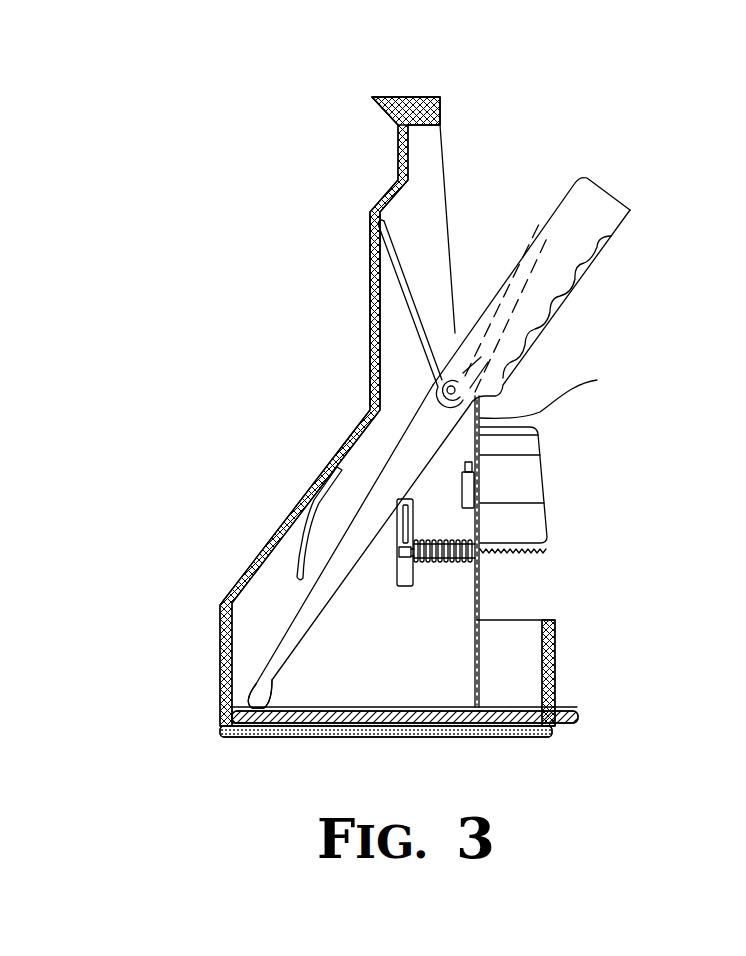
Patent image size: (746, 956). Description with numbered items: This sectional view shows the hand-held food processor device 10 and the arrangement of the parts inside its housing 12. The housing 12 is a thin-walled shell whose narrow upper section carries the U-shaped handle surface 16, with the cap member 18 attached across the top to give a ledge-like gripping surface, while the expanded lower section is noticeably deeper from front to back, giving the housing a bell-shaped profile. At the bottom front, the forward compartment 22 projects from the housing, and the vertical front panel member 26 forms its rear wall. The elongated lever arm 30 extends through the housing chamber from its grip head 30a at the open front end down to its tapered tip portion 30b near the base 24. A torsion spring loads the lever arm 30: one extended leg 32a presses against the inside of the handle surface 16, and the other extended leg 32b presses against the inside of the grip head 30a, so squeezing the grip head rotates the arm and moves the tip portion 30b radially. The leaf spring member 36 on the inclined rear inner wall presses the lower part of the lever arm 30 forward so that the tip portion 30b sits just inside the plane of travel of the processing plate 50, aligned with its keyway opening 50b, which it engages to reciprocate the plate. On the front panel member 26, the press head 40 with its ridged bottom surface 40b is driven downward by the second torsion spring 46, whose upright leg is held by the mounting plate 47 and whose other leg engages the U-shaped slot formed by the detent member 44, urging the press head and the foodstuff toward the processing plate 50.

The food processor device 10 is at (554, 370).
The housing 12 is at (356, 419).
The handle surface 16 is at (368, 255).
The cap member 18 is at (370, 98).
The forward compartment 22 is at (545, 619).
The base 24 is at (538, 734).
The front panel member 26 is at (597, 380).
The lever arm 30 is at (483, 395).
The grip head 30a is at (615, 231).
The tapered tip portion 30b is at (243, 695).
The extended leg 32a is at (390, 243).
The extended leg 32b is at (543, 219).
The leaf spring member 36 is at (306, 546).
The press head 40 is at (546, 470).
The ridged bottom surface 40b is at (534, 558).
The detent member 44 is at (458, 508).
The torsion spring 46 is at (427, 572).
The mounting plate 47 is at (396, 587).
The processing plate 50 is at (580, 718).
The keyway opening 50b is at (240, 732).